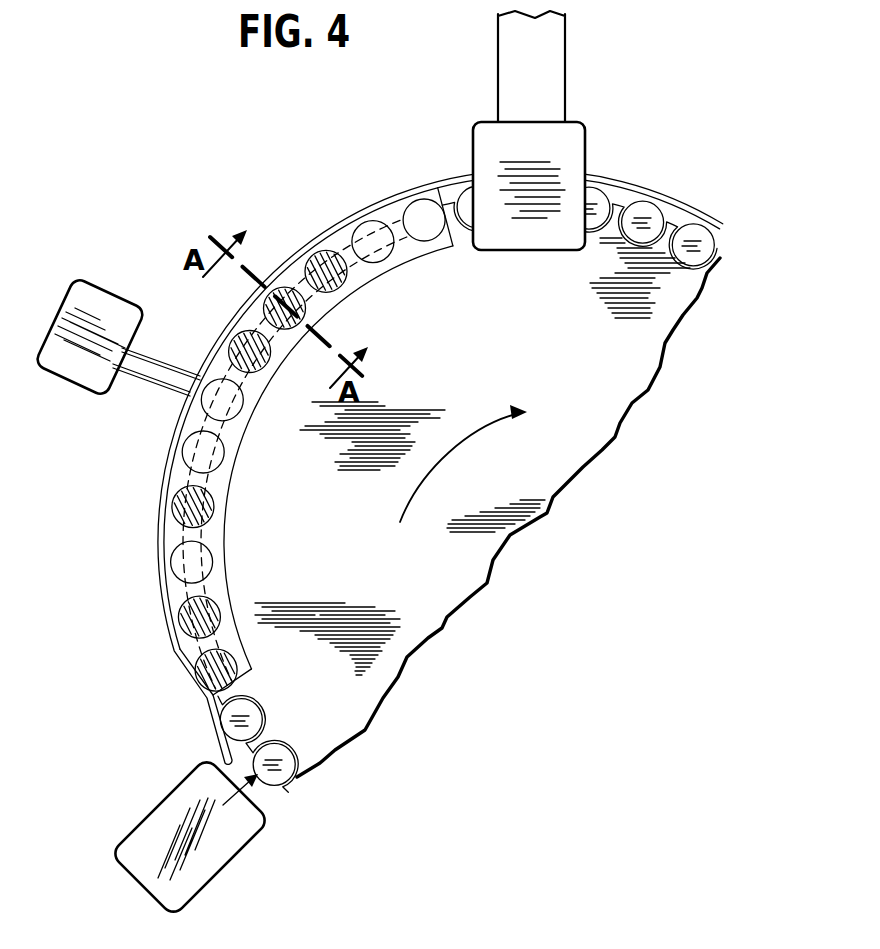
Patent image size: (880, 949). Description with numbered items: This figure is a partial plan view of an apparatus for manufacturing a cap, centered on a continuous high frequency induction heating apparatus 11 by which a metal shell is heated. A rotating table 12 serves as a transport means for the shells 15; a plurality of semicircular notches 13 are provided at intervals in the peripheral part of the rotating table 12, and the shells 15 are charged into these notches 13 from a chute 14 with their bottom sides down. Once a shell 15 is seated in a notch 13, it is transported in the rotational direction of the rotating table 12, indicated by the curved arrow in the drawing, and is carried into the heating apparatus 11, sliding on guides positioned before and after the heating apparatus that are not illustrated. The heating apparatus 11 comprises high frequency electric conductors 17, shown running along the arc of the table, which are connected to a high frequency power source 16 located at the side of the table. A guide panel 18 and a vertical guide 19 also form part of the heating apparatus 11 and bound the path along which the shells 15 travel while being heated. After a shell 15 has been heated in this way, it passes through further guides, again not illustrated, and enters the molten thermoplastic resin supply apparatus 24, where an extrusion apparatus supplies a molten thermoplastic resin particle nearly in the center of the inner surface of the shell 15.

The continuous high frequency induction heating apparatus 11 is at (346, 219).
The rotating table 12 is at (543, 478).
The semicircular notches 13 is at (382, 258).
The chute 14 is at (163, 818).
The shells 15 is at (594, 206).
The high frequency power source 16 is at (98, 308).
The high frequency electric conductors 17 is at (236, 344).
The guide panel 18 is at (236, 438).
The vertical guide 19 is at (372, 203).
The molten thermoplastic resin supply apparatus 24 is at (503, 152).